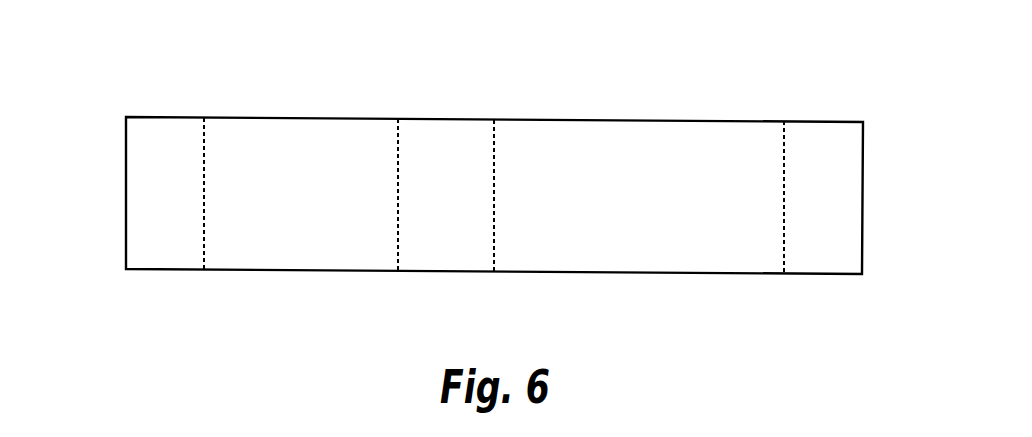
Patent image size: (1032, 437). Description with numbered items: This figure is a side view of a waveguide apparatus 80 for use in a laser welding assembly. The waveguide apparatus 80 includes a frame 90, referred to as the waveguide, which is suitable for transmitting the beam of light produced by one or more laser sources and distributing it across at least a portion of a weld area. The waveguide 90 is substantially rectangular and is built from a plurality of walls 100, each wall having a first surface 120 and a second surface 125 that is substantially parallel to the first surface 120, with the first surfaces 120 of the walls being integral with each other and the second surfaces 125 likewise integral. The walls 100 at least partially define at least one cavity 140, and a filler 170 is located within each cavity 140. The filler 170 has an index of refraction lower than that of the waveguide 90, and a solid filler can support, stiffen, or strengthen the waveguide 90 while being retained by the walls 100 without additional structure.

The waveguide apparatus 80 is at (874, 80).
The frame 90 is at (863, 260).
The walls 100 is at (145, 202).
The first surface 120 is at (167, 117).
The second surface 125 is at (168, 272).
The cavity 140 is at (204, 150).
The filler 170 is at (347, 118).